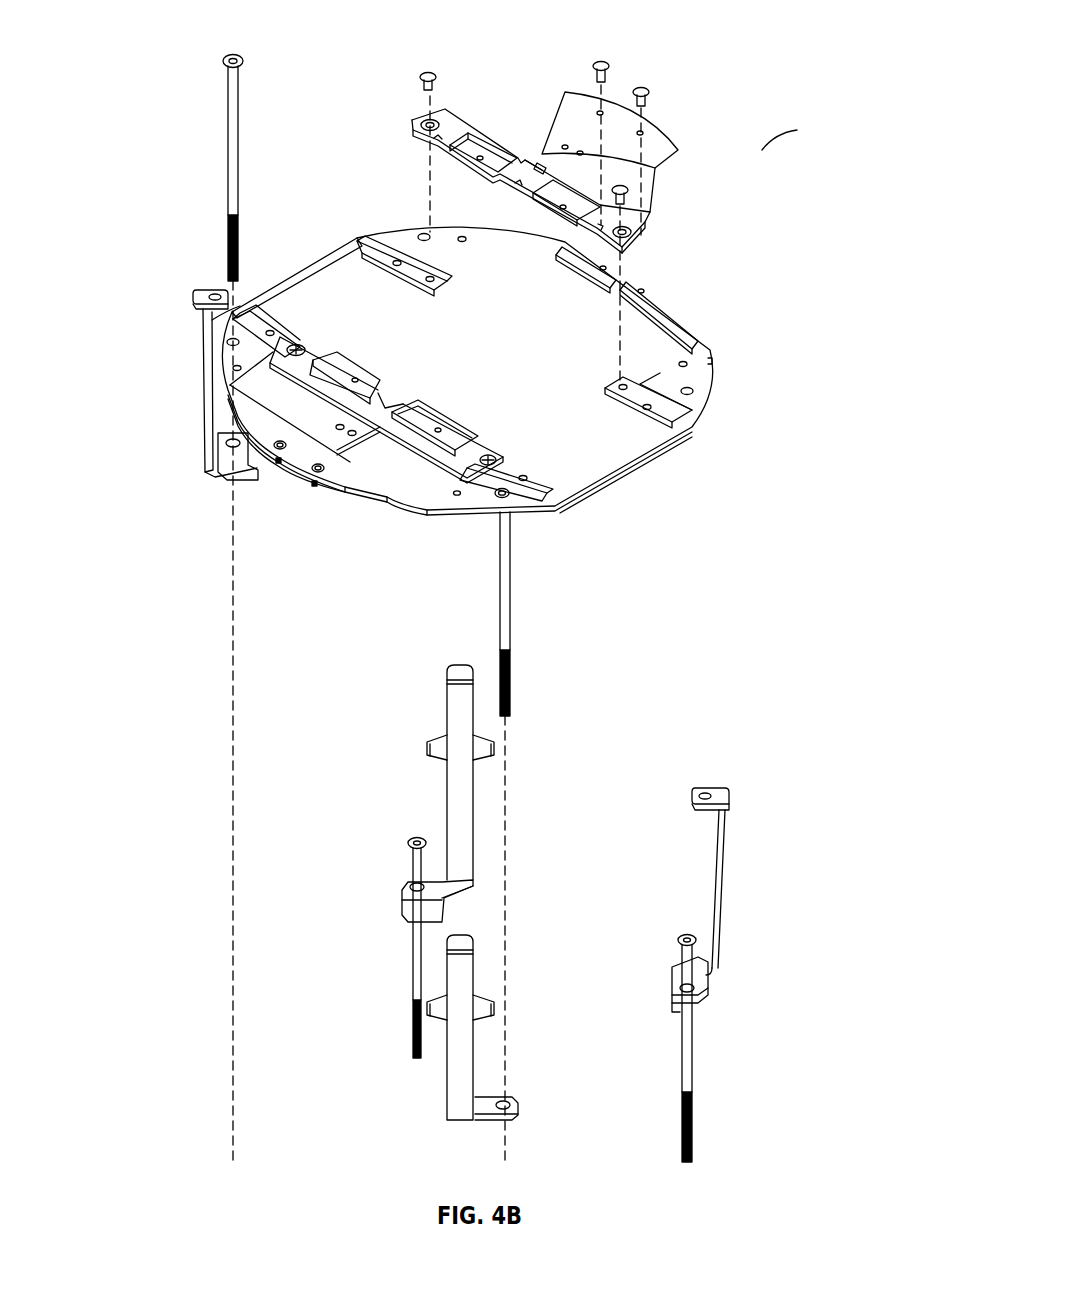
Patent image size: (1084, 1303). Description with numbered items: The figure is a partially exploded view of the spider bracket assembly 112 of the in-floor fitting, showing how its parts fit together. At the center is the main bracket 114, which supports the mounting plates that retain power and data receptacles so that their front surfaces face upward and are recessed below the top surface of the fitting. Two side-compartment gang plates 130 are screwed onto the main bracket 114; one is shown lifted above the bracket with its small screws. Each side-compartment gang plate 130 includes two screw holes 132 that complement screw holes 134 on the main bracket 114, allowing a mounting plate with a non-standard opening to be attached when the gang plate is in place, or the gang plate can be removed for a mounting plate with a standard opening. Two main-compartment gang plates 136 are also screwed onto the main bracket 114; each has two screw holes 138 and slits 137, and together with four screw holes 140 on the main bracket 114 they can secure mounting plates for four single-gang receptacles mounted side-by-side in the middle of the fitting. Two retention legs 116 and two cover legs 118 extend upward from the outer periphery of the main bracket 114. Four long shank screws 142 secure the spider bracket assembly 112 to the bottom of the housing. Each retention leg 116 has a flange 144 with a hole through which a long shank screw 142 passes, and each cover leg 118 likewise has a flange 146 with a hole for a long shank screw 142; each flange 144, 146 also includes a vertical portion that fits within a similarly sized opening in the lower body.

The spider bracket assembly 112 is at (762, 150).
The main bracket 114 is at (700, 350).
The retention leg 116 is at (457, 784).
The cover leg 118 is at (203, 342).
The side-compartment gang plate 130 is at (660, 152).
The screw hole 132 is at (580, 152).
The screw hole 134 is at (606, 270).
The main-compartment gang plate 136 is at (481, 157).
The slit 137 is at (437, 138).
The screw hole 138 is at (563, 205).
The screw hole 140 is at (397, 262).
The long shank screw 142 is at (230, 150).
The flange 144 is at (404, 896).
The flange 146 is at (222, 456).